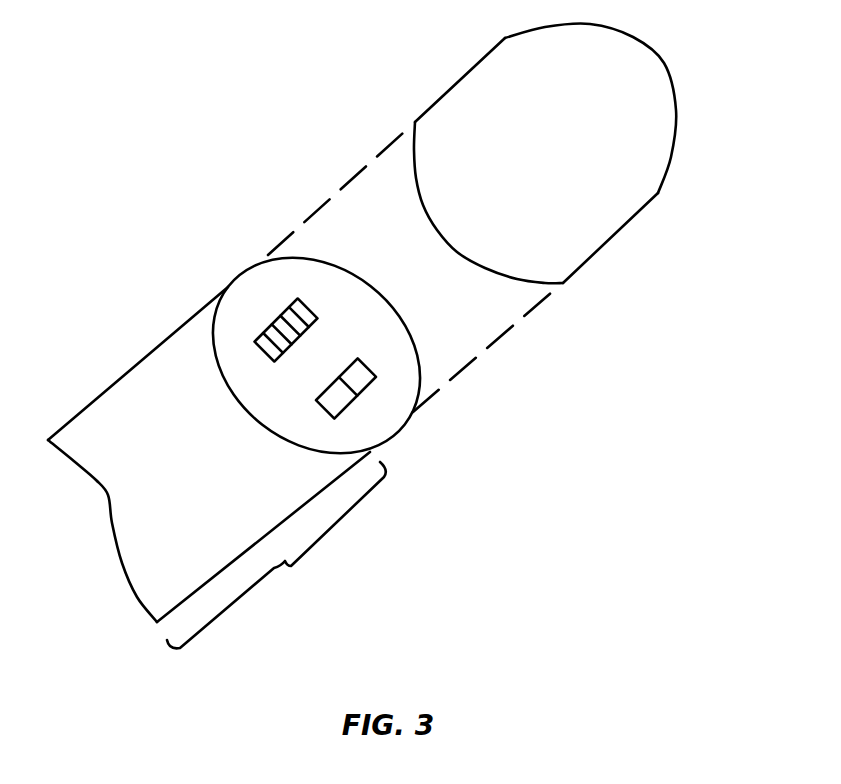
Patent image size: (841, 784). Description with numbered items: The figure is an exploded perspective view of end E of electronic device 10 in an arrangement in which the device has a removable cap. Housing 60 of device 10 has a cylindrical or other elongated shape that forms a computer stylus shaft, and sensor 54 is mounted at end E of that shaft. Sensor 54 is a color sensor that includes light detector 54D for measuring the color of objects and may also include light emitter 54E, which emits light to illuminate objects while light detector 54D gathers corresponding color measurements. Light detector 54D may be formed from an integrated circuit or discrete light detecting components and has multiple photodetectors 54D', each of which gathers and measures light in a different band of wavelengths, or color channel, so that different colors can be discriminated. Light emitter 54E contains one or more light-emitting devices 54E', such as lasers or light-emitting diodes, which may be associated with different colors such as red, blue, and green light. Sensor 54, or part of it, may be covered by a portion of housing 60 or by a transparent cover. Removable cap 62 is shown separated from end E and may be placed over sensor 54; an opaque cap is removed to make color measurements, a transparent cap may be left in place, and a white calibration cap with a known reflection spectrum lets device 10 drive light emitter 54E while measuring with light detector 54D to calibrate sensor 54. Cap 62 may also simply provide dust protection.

The electronic device 10 is at (73, 358).
The end E is at (195, 247).
The sensor 54 is at (272, 390).
The light detector 54D is at (286, 272).
The photodetectors 54D' is at (226, 376).
The light emitter 54E is at (406, 406).
The light-emitting devices 54E' is at (372, 319).
The housing 60 is at (276, 555).
The cap 62 is at (650, 197).